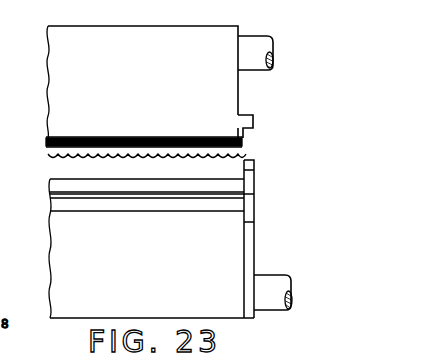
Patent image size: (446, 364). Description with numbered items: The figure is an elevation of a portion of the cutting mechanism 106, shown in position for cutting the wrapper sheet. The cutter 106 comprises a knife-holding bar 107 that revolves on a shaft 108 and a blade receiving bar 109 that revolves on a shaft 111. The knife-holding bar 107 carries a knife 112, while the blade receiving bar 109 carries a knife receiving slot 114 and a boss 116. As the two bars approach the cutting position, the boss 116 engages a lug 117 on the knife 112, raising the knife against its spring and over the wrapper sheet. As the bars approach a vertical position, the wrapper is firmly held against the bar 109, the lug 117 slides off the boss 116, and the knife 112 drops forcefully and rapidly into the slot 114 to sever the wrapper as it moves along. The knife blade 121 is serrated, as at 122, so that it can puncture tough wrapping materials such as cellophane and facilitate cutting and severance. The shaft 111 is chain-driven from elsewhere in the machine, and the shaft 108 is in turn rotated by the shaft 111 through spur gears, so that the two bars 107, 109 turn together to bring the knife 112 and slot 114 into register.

The cutting mechanism 106 is at (282, 158).
The knife-holding bar 107 is at (227, 101).
The shaft 108 is at (262, 57).
The blade receiving bar 109 is at (233, 251).
The shaft 111 is at (277, 302).
The knife 112 is at (243, 143).
The knife receiving slot 114 is at (60, 197).
The boss 116 is at (254, 164).
The lug 117 is at (253, 121).
The knife blade 121 is at (50, 158).
The serrations 122 is at (78, 157).